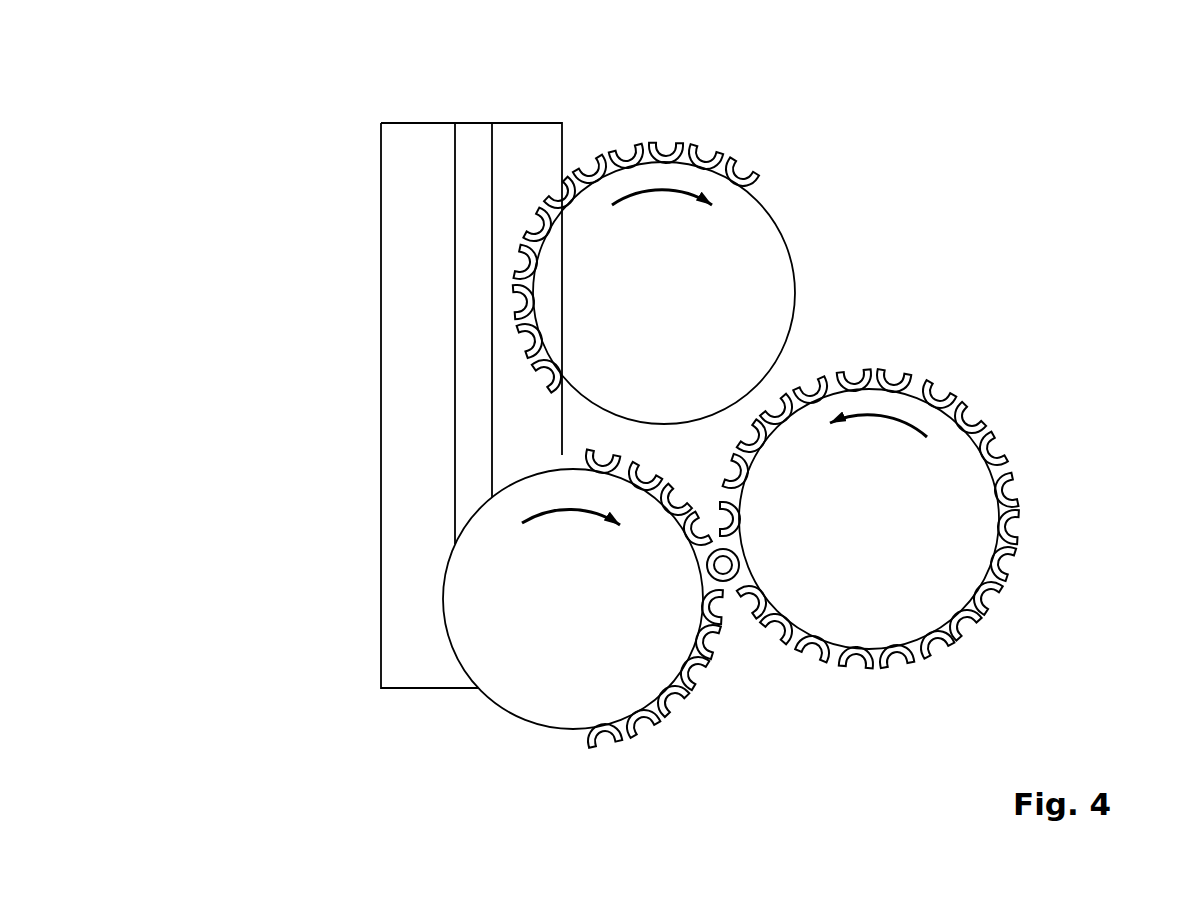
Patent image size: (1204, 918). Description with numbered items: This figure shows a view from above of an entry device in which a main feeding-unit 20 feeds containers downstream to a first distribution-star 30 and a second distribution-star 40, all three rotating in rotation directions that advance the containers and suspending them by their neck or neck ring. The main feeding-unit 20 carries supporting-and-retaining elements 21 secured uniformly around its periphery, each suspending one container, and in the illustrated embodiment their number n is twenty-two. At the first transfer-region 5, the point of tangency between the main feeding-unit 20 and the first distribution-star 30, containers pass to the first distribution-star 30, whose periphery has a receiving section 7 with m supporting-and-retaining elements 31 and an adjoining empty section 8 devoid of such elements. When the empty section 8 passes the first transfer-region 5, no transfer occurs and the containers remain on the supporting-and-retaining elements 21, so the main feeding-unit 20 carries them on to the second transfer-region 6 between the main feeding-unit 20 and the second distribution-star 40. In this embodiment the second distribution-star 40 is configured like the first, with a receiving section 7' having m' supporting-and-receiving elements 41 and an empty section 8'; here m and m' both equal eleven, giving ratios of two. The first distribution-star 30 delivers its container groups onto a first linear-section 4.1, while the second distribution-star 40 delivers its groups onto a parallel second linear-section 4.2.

The first linear-section 4.1 is at (527, 165).
The second linear-section 4.2 is at (417, 402).
The first transfer-region 5 is at (825, 352).
The second transfer-region 6 is at (740, 635).
The receiving section 7 is at (466, 131).
The receiving section 7' is at (765, 783).
The empty section 8 is at (820, 184).
The empty section 8' is at (330, 620).
The main feeding-unit 20 is at (945, 493).
The supporting-and-retaining elements 21 is at (948, 397).
The first distribution-star 30 is at (733, 280).
The supporting-and-retaining elements 31 is at (713, 158).
The second distribution-star 40 is at (550, 687).
The supporting-and-receiving elements 41 is at (660, 725).